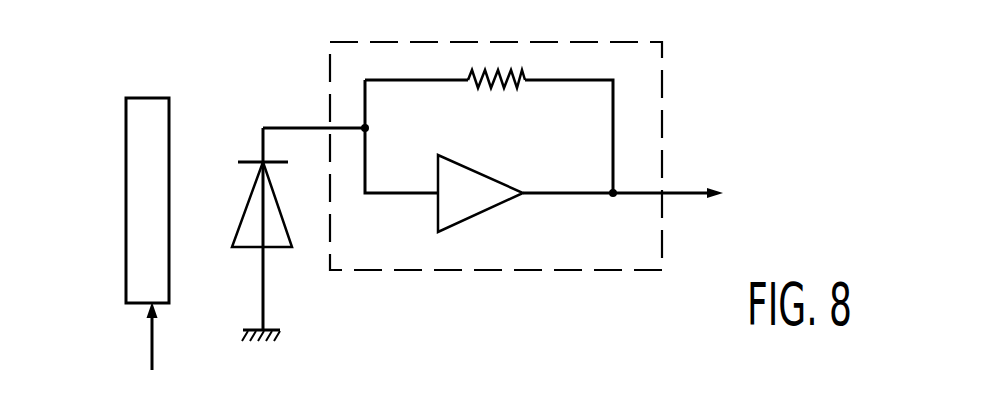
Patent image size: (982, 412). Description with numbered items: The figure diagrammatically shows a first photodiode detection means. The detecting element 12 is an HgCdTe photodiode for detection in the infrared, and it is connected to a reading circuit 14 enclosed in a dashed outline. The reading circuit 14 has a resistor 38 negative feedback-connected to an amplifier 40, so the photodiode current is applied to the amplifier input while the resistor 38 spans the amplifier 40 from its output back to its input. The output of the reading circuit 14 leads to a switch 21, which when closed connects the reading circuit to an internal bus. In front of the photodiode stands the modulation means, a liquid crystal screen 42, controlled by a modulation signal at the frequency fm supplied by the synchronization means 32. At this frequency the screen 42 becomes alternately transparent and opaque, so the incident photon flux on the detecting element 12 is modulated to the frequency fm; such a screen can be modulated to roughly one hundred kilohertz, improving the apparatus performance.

The detecting element 12 is at (248, 152).
The reading circuit 14 is at (662, 72).
The switch 21 is at (751, 194).
The synchronization means 32 is at (116, 338).
The resistor 38 is at (483, 90).
The amplifier 40 is at (500, 190).
The liquid crystal screen 42 is at (133, 157).